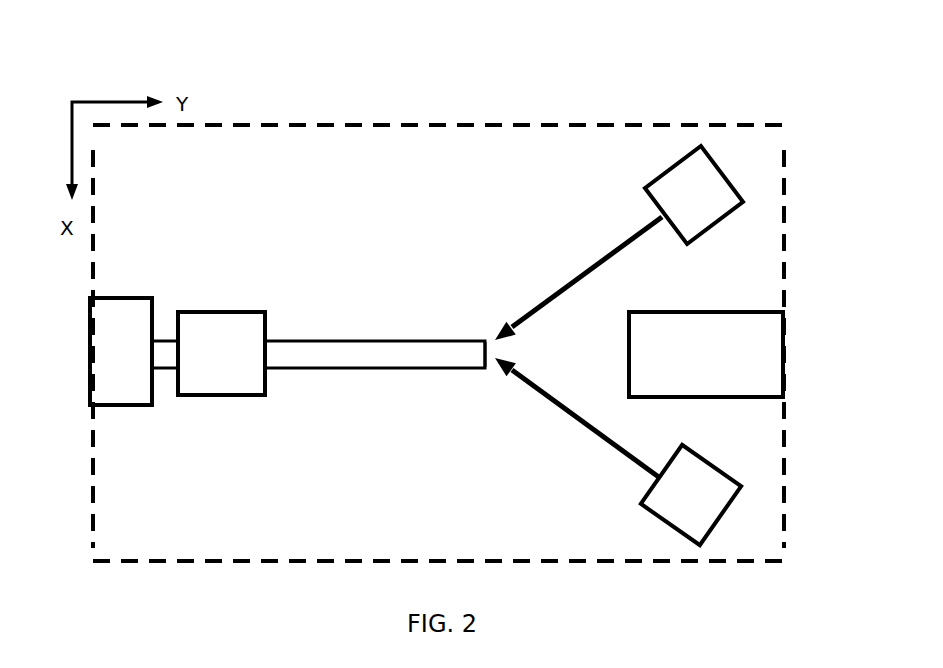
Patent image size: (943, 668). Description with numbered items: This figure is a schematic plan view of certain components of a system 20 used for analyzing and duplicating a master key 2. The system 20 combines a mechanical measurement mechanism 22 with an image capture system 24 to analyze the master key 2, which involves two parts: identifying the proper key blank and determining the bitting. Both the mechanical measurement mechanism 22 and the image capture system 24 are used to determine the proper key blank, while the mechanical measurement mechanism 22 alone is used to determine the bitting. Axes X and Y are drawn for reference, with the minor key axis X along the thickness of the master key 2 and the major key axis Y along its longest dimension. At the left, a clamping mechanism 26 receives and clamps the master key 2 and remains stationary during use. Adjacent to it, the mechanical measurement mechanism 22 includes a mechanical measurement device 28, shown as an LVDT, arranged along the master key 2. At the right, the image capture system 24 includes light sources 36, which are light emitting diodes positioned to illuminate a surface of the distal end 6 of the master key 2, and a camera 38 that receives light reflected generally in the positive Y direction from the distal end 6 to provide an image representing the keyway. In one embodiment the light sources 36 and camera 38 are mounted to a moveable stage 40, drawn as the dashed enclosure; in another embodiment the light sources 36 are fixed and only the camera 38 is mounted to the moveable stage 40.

The master key 2 is at (358, 369).
The distal end 6 is at (483, 358).
The system 20 is at (583, 78).
The mechanical measurement mechanism 22 is at (313, 242).
The image capture system 24 is at (574, 229).
The clamping mechanism 26 is at (130, 405).
The mechanical measurement device 28 is at (217, 395).
The light sources 36 is at (720, 170).
The camera 38 is at (697, 313).
The moveable stage 40 is at (266, 124).